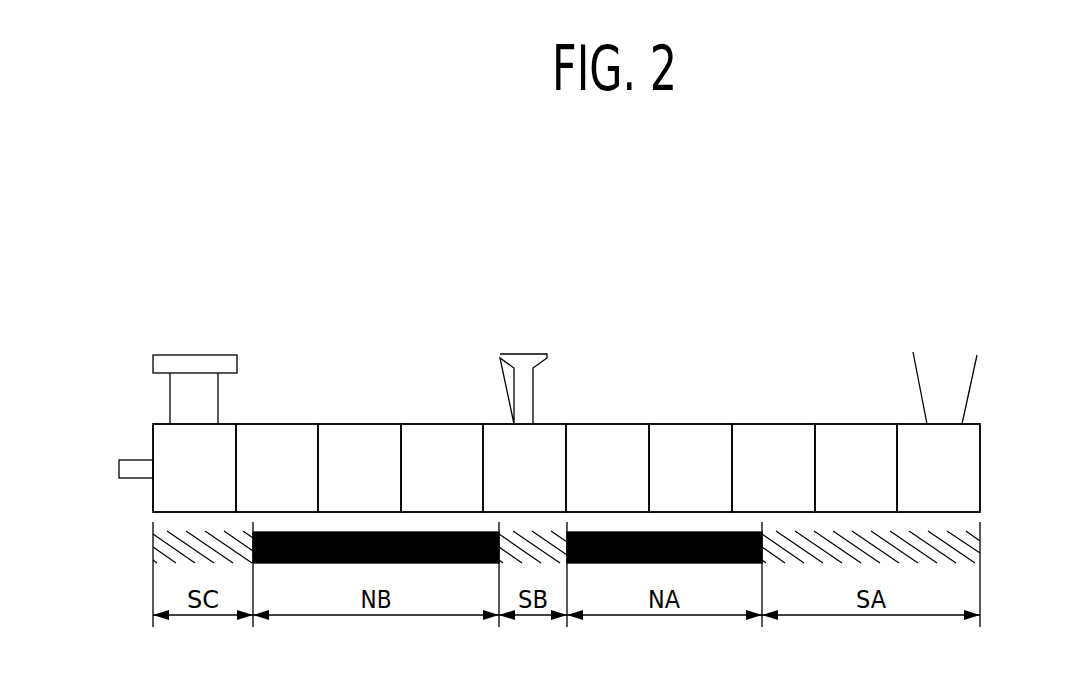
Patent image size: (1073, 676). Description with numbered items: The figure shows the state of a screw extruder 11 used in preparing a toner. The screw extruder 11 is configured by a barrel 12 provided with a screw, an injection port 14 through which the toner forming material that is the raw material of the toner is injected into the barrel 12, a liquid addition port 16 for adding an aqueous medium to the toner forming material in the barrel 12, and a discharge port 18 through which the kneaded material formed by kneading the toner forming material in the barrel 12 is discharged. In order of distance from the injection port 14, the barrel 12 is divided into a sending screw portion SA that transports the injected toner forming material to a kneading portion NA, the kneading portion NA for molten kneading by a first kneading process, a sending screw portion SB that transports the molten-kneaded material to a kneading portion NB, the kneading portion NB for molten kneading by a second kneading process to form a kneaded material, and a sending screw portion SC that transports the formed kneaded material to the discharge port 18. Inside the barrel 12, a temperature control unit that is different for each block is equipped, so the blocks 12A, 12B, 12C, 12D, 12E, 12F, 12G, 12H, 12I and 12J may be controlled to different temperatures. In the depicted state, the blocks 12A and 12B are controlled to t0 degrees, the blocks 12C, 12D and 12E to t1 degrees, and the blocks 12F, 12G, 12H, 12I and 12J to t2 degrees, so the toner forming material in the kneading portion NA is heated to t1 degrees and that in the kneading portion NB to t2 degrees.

The screw extruder 11 is at (761, 279).
The barrel 12 is at (984, 455).
The block 12A is at (910, 424).
The block 12B is at (847, 424).
The block 12C is at (763, 424).
The block 12D is at (685, 424).
The block 12E is at (607, 424).
The block 12F is at (496, 424).
The block 12G is at (438, 424).
The block 12H is at (362, 424).
The block 12I is at (288, 424).
The block 12J is at (160, 424).
The injection port 14 is at (944, 424).
The liquid addition port 16 is at (524, 354).
The discharge port 18 is at (120, 470).